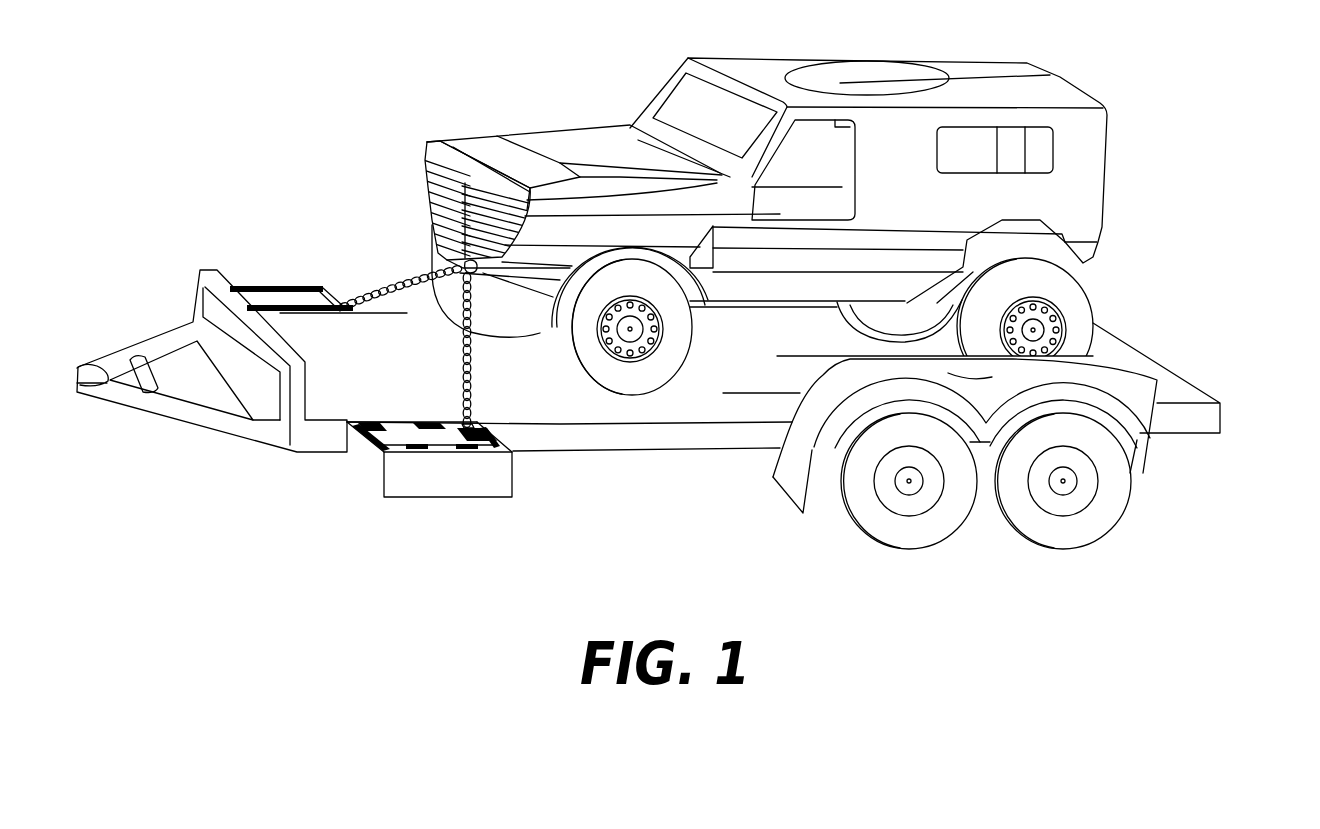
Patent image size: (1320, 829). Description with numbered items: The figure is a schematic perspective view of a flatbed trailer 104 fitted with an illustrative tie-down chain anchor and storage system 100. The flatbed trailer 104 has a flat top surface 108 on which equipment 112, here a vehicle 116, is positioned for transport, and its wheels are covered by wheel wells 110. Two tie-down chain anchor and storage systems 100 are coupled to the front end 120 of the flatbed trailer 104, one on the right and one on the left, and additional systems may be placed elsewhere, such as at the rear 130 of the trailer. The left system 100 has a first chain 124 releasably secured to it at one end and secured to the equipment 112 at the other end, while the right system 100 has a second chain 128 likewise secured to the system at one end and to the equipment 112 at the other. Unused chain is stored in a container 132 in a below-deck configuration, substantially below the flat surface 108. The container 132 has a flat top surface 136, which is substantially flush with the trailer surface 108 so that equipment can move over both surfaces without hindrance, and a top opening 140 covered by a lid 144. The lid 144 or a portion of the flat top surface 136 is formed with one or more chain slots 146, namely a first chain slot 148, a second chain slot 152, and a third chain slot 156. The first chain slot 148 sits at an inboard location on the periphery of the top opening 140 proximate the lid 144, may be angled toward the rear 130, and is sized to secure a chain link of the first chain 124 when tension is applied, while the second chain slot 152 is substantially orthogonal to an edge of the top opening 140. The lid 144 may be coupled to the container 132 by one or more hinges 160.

The tie-down chain anchor and storage system 100 is at (237, 281).
The flatbed trailer 104 is at (1153, 383).
The flat top surface 108 is at (1105, 340).
The wheel wells 110 is at (777, 475).
The equipment 112 is at (563, 127).
The vehicle 116 is at (572, 197).
The front end 120 is at (291, 337).
The first chain 124 is at (445, 352).
The second chain 128 is at (407, 278).
The rear 130 is at (1223, 408).
The container 132 is at (407, 497).
The flat top surface 136 is at (490, 434).
The top opening 140 is at (478, 430).
The lid 144 is at (403, 433).
The chain slots 146 is at (467, 425).
The first chain slot 148 is at (477, 434).
The second chain slot 152 is at (409, 420).
The third chain slot 156 is at (375, 421).
The hinges 160 is at (422, 452).